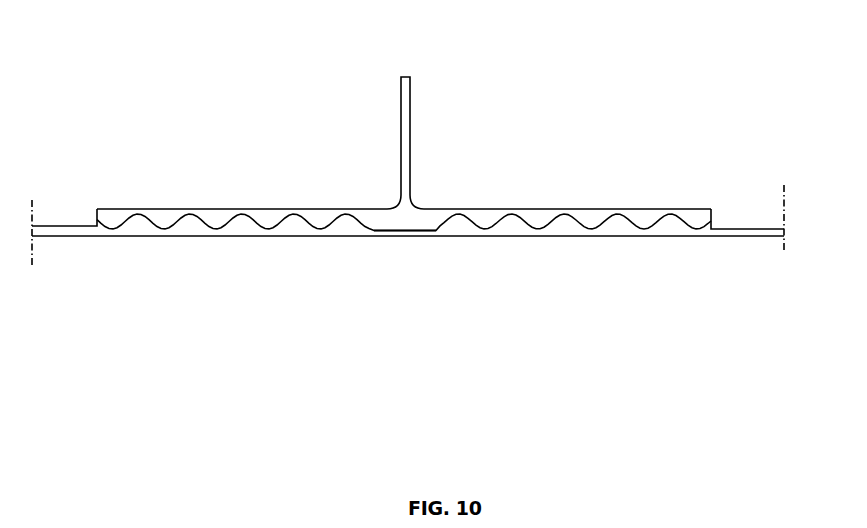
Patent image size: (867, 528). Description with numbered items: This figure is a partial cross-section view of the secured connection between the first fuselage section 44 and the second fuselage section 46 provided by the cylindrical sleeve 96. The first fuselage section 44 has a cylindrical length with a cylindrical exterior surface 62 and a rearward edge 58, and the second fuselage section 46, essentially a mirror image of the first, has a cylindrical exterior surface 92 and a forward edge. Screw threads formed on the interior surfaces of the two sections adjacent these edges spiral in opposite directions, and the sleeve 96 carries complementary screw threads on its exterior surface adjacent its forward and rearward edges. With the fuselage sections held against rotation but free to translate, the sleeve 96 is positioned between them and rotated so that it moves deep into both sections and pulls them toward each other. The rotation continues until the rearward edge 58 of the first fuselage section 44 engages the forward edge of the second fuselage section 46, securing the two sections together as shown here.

The first fuselage section 44 is at (138, 224).
The second fuselage section 46 is at (676, 223).
The rearward edge 58 is at (403, 236).
The exterior surface 62 is at (245, 234).
The exterior surface 92 is at (537, 237).
The cylindrical sleeve 96 is at (413, 217).